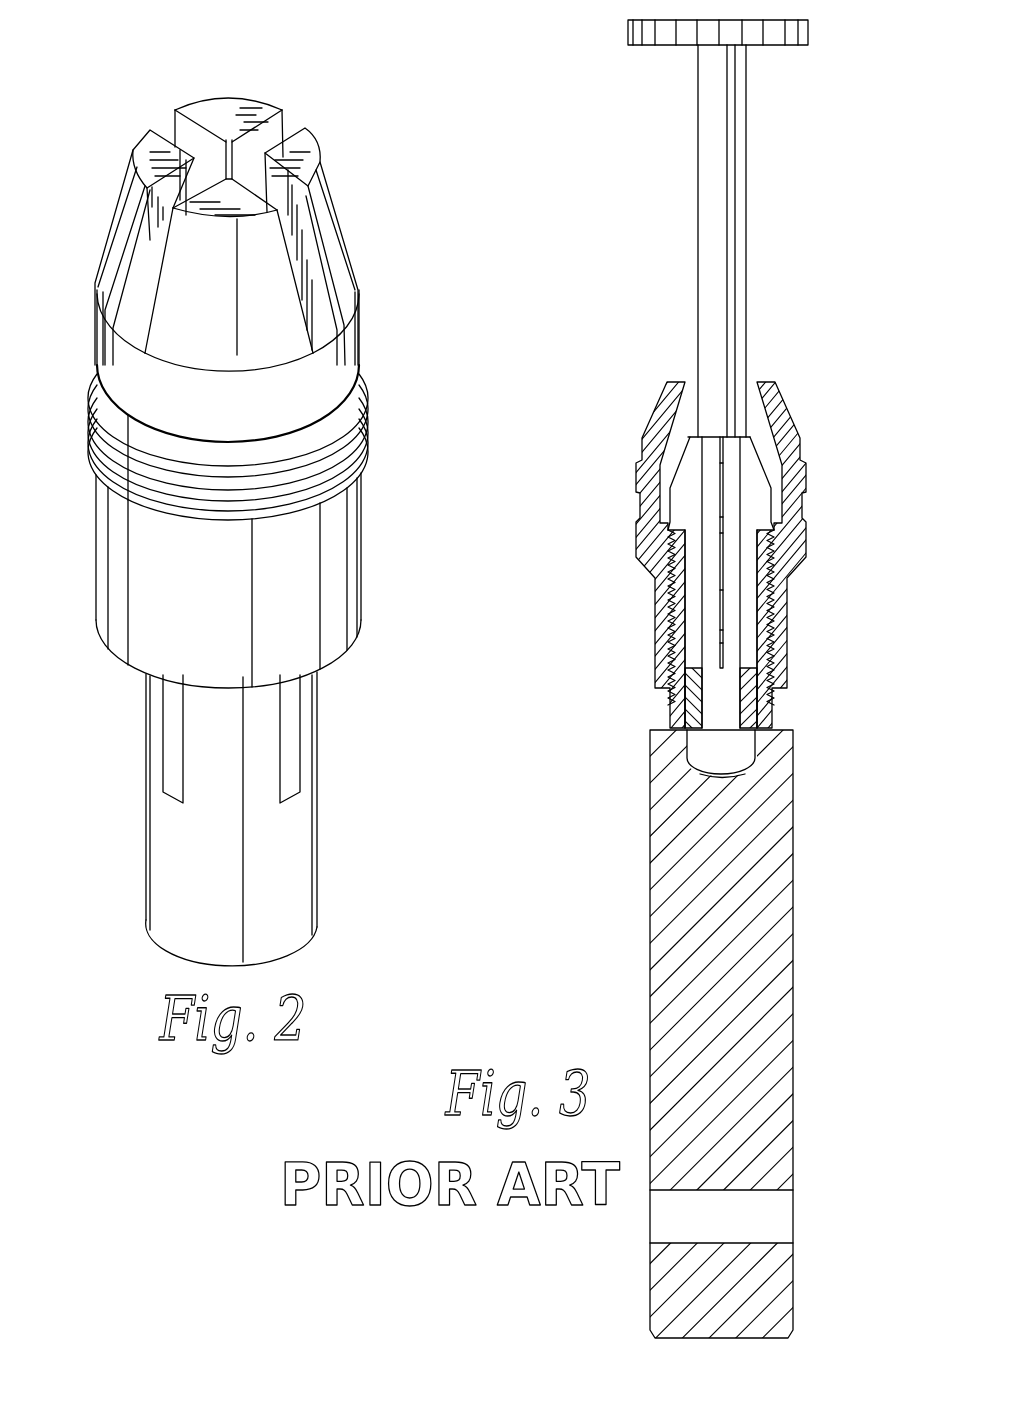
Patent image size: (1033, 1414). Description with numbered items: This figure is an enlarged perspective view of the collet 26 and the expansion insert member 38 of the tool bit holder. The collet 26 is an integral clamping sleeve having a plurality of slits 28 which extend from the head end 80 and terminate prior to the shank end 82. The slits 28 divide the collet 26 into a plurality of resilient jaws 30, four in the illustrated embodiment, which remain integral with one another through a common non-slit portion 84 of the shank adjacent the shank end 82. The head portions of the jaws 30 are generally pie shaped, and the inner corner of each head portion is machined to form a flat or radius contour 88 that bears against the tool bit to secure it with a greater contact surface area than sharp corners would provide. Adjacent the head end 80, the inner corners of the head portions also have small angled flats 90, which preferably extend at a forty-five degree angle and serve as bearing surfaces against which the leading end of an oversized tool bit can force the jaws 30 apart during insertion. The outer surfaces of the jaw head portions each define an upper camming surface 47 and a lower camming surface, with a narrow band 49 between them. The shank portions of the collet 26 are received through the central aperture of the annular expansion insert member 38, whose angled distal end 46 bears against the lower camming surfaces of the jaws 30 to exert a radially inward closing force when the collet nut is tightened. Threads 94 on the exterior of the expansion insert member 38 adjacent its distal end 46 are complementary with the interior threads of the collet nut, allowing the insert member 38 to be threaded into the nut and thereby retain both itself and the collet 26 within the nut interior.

The collet 26 is at (318, 778).
The slits 28 is at (306, 196).
The resilient jaws 30 is at (233, 85).
The expansion insert member 38 is at (365, 530).
The distal end of expansion insert member 46 is at (363, 373).
The upper camming surface 47 is at (118, 255).
The narrow band 49 is at (95, 332).
The head end 80 is at (253, 110).
The shank end 82 is at (298, 942).
The common non-slit portion 84 is at (225, 877).
The flat or radius contour 88 is at (233, 157).
The angled flats 90 is at (227, 140).
The threads 94 is at (368, 400).